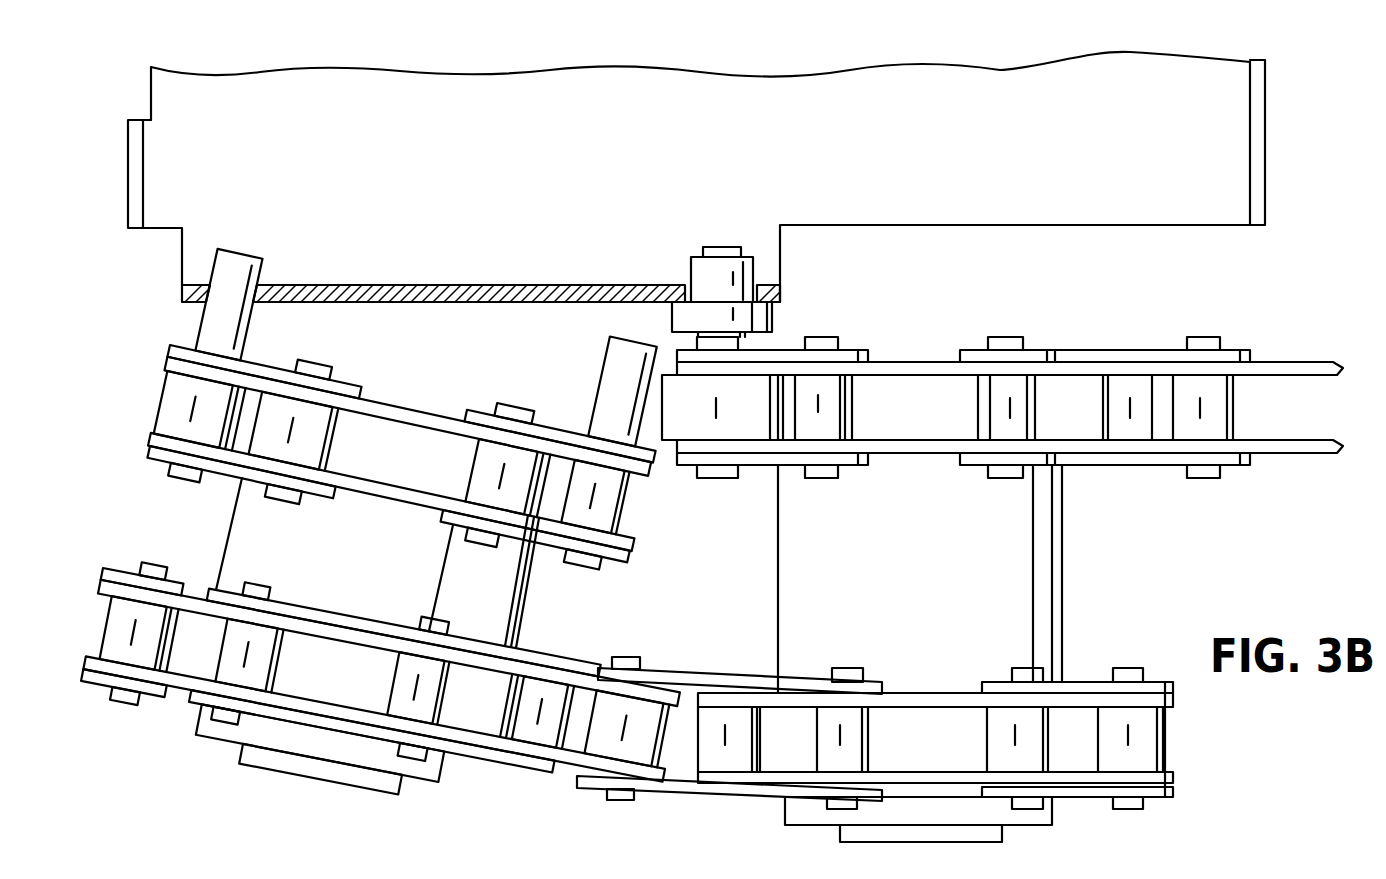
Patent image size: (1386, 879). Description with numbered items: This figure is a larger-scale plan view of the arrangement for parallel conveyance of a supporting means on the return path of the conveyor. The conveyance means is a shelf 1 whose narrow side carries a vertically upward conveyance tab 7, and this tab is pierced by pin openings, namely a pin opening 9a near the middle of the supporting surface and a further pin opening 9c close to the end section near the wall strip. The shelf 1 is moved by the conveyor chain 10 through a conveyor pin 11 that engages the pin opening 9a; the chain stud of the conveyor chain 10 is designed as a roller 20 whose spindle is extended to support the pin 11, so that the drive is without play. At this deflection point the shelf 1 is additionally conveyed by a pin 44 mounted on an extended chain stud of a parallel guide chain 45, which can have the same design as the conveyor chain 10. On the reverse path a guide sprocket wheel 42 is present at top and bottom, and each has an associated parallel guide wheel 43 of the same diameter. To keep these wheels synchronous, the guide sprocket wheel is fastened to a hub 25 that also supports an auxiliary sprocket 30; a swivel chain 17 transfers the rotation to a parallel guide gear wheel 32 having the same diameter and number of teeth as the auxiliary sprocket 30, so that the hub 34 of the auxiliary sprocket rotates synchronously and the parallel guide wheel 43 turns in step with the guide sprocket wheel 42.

The shelf 1 is at (156, 273).
The conveyance tab 7 is at (488, 306).
The pin opening 9a is at (772, 291).
The pin opening 9c is at (200, 297).
The conveyor chain 10 is at (1283, 368).
The conveyor pin 11 is at (748, 276).
The swivel chain 17 is at (695, 797).
The roller 20 is at (718, 425).
The hub 25 is at (1003, 548).
The auxiliary sprocket 30 is at (778, 748).
The parallel guide gear wheel 32 is at (377, 699).
The hub 34 is at (267, 537).
The guide sprocket wheel 42 is at (1073, 405).
The parallel guide wheel 43 is at (409, 422).
The pin 44 is at (426, 347).
The parallel guide chain 45 is at (179, 425).